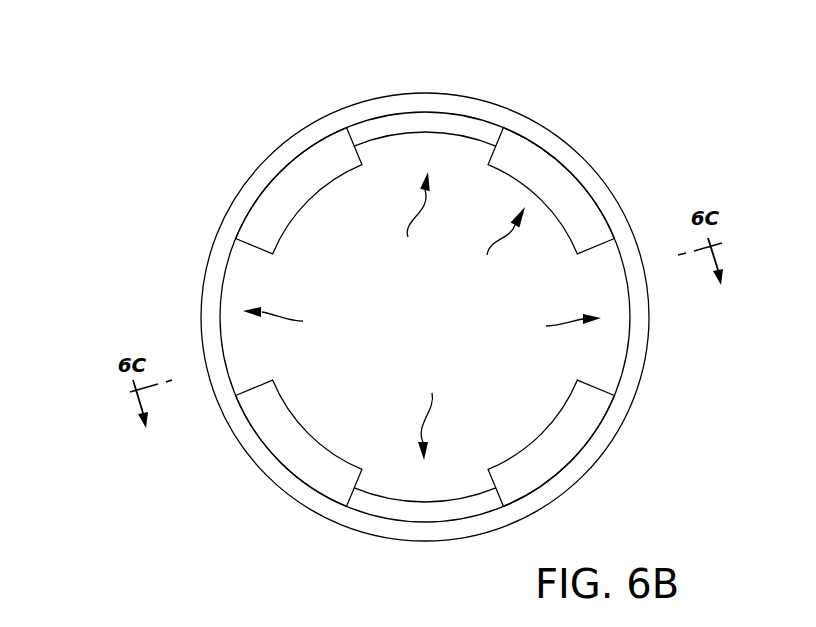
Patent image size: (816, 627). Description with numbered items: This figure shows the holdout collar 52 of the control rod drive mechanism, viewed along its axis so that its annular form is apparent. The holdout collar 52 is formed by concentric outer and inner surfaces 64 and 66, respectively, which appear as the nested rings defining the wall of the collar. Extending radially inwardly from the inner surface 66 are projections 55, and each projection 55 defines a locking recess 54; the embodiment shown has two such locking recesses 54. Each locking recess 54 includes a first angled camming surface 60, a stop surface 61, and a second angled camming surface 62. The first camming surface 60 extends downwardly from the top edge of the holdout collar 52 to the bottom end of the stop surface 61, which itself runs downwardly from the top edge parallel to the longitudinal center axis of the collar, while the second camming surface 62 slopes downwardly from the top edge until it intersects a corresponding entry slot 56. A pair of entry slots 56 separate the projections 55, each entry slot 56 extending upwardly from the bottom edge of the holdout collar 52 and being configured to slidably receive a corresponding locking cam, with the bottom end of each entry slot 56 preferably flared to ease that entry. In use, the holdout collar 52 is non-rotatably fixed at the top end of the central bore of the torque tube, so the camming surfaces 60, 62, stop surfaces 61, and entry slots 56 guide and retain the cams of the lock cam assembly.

The holdout collar 52 is at (140, 290).
The locking recess 54 is at (425, 316).
The projection 55 is at (495, 248).
The entry slot 56 is at (422, 326).
The first angled camming surface 60 is at (470, 138).
The stop surface 61 is at (362, 157).
The second angled camming surface 62 is at (302, 177).
The outer surface 64 is at (615, 198).
The inner surface 66 is at (222, 356).